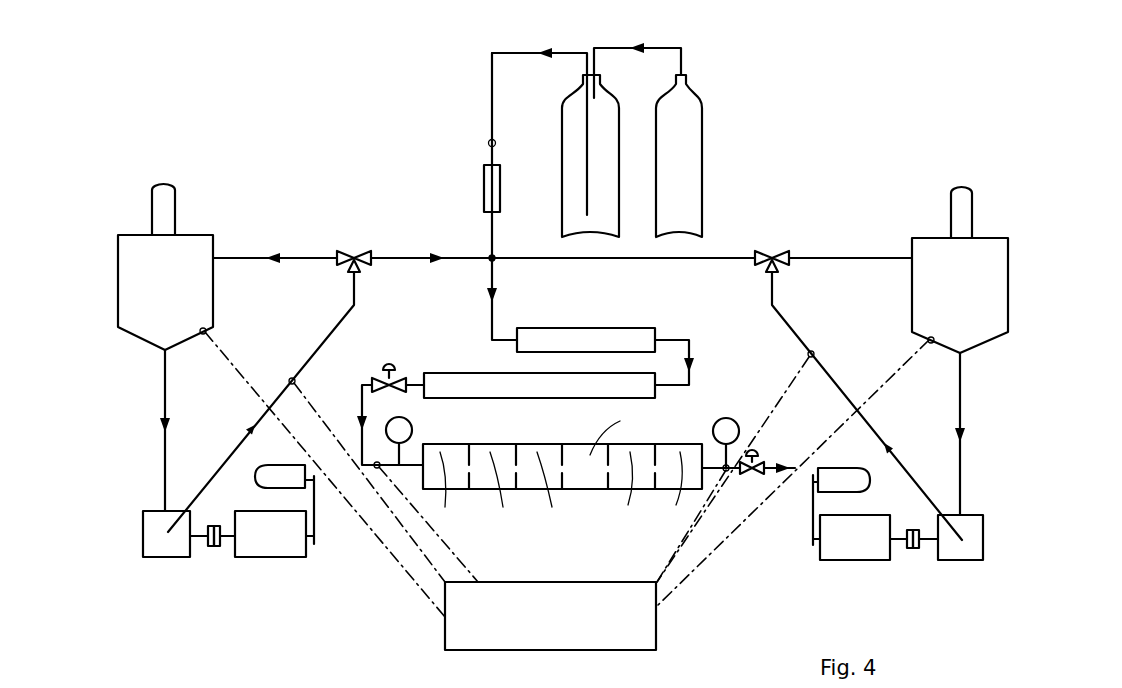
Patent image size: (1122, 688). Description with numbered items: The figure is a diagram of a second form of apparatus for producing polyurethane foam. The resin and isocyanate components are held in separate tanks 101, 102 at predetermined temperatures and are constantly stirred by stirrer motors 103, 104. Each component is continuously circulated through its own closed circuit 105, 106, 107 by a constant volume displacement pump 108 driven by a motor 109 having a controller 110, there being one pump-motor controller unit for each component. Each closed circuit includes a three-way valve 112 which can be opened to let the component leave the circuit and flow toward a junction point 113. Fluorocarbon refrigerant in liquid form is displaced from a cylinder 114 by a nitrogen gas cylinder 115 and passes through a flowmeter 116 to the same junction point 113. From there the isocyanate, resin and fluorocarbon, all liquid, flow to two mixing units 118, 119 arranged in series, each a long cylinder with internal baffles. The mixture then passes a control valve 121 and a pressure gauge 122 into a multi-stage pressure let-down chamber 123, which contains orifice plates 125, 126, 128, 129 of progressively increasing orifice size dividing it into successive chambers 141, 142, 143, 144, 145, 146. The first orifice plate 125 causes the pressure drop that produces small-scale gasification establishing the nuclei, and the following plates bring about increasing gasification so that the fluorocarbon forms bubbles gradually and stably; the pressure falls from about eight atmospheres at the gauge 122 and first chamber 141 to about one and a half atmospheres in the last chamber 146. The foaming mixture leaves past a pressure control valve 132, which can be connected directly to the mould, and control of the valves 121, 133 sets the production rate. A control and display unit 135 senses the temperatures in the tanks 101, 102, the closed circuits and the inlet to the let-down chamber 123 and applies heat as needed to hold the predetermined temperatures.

The tank 101 is at (133, 248).
The tank 102 is at (990, 288).
The stirrer motor 103 is at (165, 205).
The stirrer motor 104 is at (963, 223).
The closed circuit 105 is at (163, 380).
The closed circuit 106 is at (237, 447).
The closed circuit 107 is at (283, 261).
The constant volume displacement pump 108 is at (173, 550).
The motor 109 is at (273, 545).
The controller 110 is at (310, 493).
The three-way valve 112 is at (343, 253).
The junction point 113 is at (488, 255).
The cylinder 114 is at (563, 125).
The nitrogen gas cylinder 115 is at (702, 128).
The flowmeter 116 is at (490, 177).
The mixing unit 118 is at (563, 337).
The mixing unit 119 is at (513, 380).
The control valve 121 is at (393, 372).
The pressure gauge 122 is at (390, 422).
The multi-stage pressure let-down chamber 123 is at (533, 440).
The orifice plate 125 is at (470, 476).
The orifice plate 126 is at (517, 478).
The orifice plate 128 is at (607, 478).
The orifice plate 129 is at (654, 478).
The pressure control valve 132 is at (726, 418).
The valve 133 is at (763, 474).
The control and display unit 135 is at (483, 623).
The chamber 141 is at (447, 491).
The chamber 142 is at (503, 491).
The chamber 143 is at (559, 491).
The chamber 144 is at (626, 429).
The chamber 145 is at (613, 491).
The chamber 146 is at (672, 491).